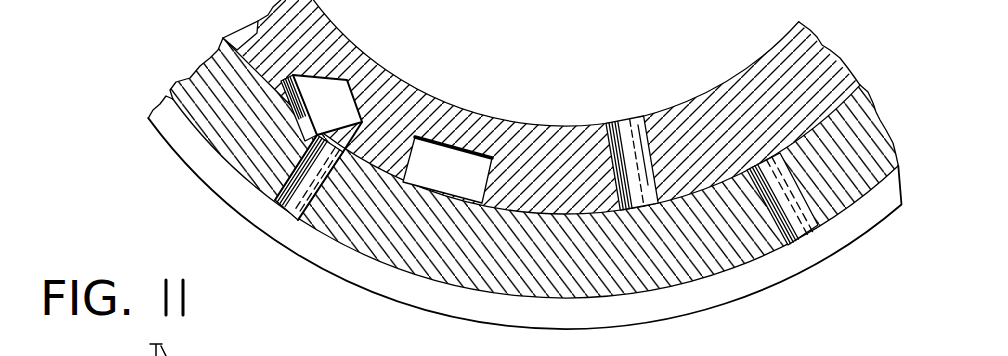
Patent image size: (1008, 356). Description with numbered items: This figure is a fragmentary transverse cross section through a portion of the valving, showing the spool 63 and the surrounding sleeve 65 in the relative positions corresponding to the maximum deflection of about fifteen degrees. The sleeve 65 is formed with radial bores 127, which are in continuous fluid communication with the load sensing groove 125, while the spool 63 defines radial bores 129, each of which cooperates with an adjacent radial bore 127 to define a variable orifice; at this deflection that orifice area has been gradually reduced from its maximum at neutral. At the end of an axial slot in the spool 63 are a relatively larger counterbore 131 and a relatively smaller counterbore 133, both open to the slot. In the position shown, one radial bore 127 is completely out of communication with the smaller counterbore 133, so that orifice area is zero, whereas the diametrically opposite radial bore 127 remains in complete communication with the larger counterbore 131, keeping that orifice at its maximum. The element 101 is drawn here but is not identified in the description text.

The spool 63 is at (570, 147).
The sleeve 65 is at (670, 267).
The pad 101 is at (463, 163).
The load sensing groove 125 is at (462, 305).
The radial bore 127 is at (797, 216).
The radial bore 129 is at (638, 137).
The larger counterbore 131 is at (317, 111).
The smaller counterbore 133 is at (240, 42).